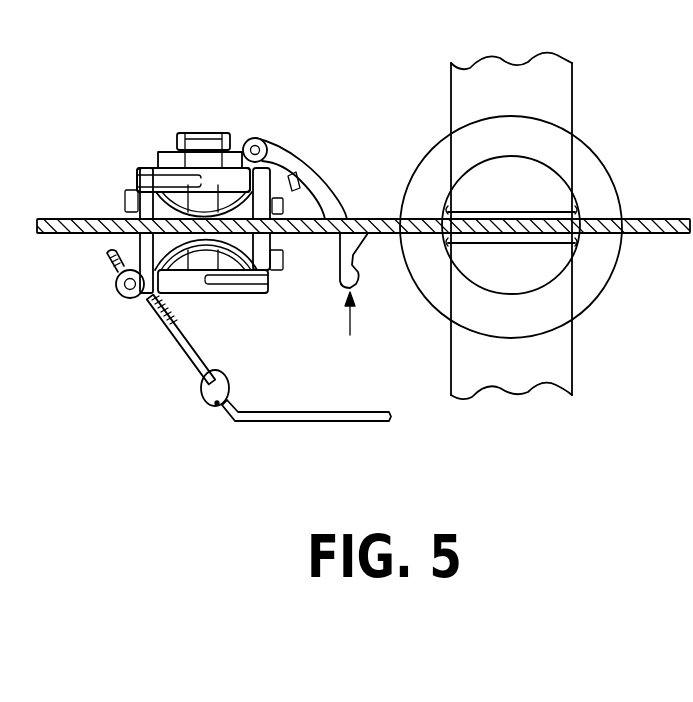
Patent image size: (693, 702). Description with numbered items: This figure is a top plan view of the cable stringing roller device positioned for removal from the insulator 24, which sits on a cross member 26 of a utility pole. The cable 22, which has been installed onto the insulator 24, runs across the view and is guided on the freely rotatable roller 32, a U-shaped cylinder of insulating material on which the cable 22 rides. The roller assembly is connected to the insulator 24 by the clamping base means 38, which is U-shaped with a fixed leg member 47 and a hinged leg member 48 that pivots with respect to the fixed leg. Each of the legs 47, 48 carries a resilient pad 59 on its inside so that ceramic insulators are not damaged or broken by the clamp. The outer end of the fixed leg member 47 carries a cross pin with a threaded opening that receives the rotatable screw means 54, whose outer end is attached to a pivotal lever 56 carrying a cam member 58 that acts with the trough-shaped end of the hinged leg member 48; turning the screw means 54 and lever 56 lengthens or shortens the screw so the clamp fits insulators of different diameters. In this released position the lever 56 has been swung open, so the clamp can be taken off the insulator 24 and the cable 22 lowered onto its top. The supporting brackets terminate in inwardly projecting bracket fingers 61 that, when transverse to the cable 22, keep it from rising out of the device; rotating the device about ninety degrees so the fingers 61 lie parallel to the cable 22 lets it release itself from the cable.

The cable 22 is at (56, 220).
The insulator 24 is at (442, 161).
The cross member 26 is at (548, 98).
The roller 32 is at (163, 210).
The clamping base means 38 is at (353, 339).
The fixed leg member 47 is at (117, 291).
The hinged leg member 48 is at (273, 145).
The screw means 54 is at (178, 360).
The pivotal lever 56 is at (325, 418).
The cam member 58 is at (223, 387).
The resilient pad 59 is at (318, 198).
The bracket fingers 61 is at (230, 178).